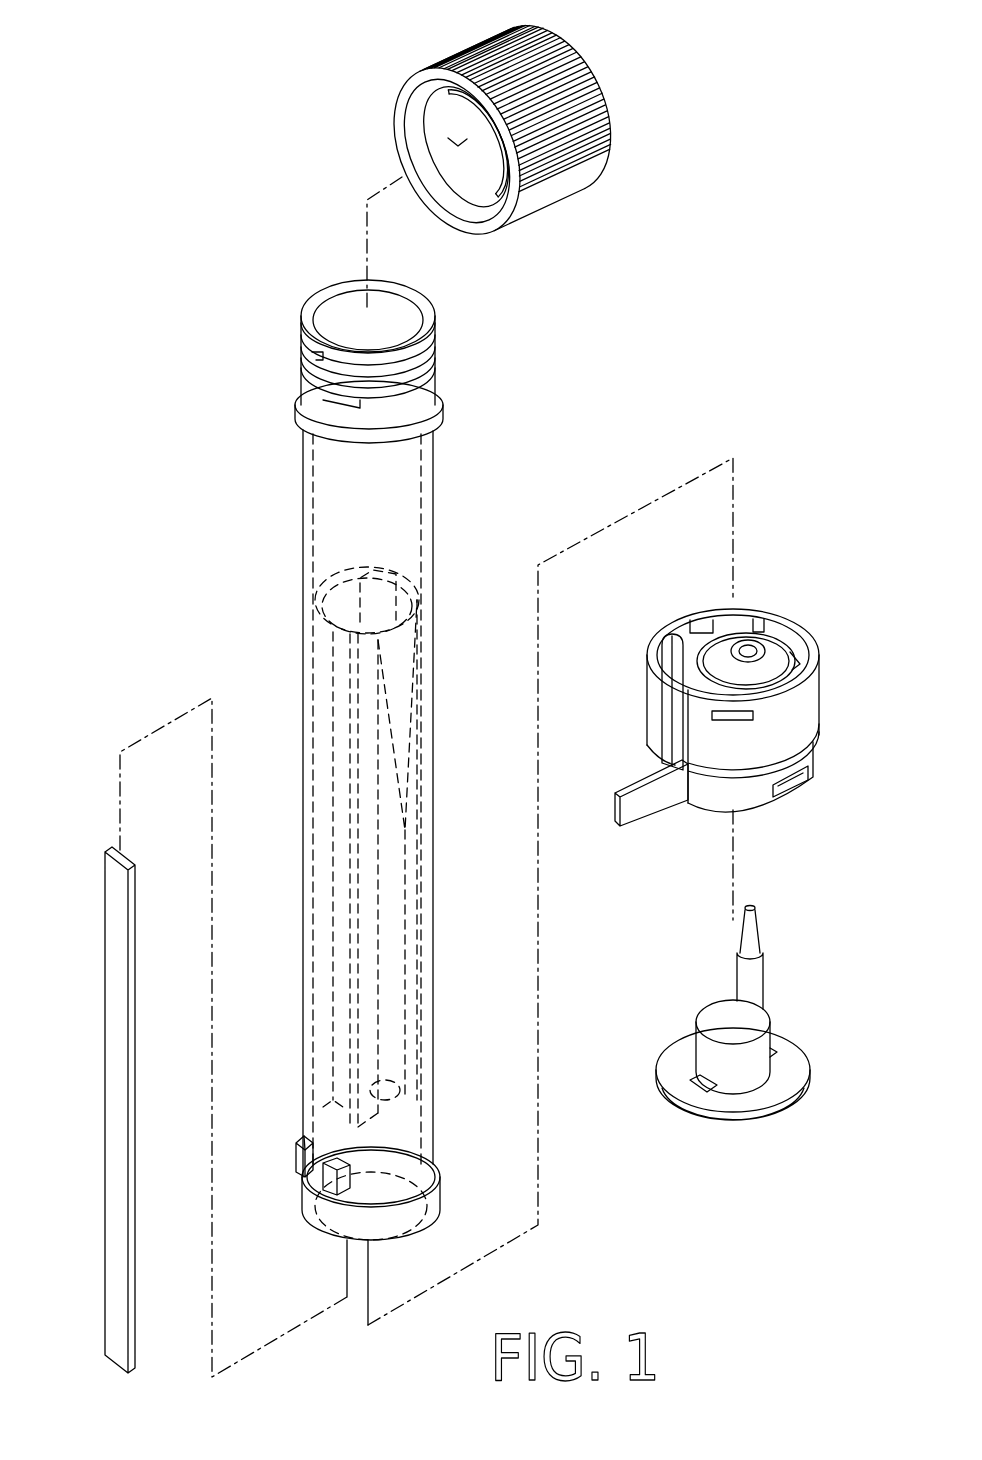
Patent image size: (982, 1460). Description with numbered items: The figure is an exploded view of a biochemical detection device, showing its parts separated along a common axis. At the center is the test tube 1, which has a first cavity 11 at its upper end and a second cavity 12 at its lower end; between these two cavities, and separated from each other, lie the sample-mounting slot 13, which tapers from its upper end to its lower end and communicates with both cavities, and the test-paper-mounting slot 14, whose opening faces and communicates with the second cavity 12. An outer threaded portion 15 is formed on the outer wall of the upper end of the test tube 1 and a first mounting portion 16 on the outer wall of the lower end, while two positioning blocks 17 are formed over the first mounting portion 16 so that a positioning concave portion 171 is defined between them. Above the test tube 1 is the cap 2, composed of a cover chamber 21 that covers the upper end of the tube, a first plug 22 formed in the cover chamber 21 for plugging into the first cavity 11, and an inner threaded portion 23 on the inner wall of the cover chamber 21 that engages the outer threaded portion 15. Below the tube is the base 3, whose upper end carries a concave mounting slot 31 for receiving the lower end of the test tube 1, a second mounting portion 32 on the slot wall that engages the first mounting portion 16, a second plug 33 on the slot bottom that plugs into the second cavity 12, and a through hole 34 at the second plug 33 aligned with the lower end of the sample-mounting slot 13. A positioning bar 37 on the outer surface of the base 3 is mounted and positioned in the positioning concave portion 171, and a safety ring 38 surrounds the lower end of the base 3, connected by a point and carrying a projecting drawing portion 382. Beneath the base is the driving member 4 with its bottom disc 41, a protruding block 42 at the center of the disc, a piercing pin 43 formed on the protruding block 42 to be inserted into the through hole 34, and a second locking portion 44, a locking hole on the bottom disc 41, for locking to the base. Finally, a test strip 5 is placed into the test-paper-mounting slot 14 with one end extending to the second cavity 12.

The test tube 1 is at (305, 498).
The first cavity 11 is at (420, 472).
The second cavity 12 is at (418, 1128).
The sample-mounting slot 13 is at (405, 878).
The test-paper-mounting slot 14 is at (335, 672).
The outer threaded portion 15 is at (312, 356).
The first mounting portion 16 is at (300, 1183).
The positioning blocks 17 is at (300, 1150).
The positioning concave portion 171 is at (318, 1145).
The cap 2 is at (597, 78).
The cover chamber 21 is at (418, 120).
The first plug 22 is at (493, 177).
The inner threaded portion 23 is at (458, 145).
The base 3 is at (805, 705).
The mounting slot 31 is at (805, 656).
The second mounting portion 32 is at (695, 622).
The second plug 33 is at (773, 650).
The through hole 34 is at (748, 640).
The positioning bar 37 is at (668, 650).
The safety ring 38 is at (748, 800).
The drawing portion 382 is at (638, 805).
The driving member 4 is at (805, 1033).
The bottom disc 41 is at (788, 1085).
The protruding block 42 is at (700, 1050).
The piercing pin 43 is at (753, 978).
The second locking portion 44 is at (700, 1090).
The test strip 5 is at (108, 1097).